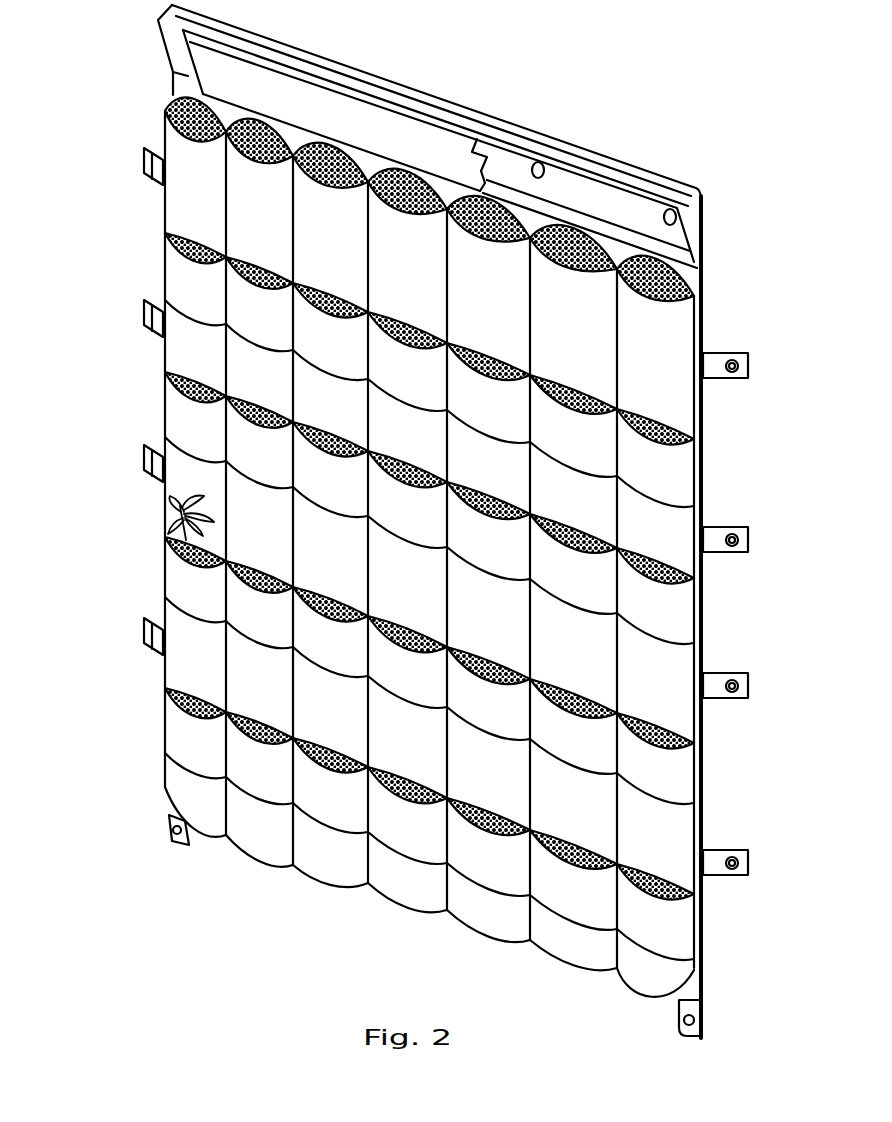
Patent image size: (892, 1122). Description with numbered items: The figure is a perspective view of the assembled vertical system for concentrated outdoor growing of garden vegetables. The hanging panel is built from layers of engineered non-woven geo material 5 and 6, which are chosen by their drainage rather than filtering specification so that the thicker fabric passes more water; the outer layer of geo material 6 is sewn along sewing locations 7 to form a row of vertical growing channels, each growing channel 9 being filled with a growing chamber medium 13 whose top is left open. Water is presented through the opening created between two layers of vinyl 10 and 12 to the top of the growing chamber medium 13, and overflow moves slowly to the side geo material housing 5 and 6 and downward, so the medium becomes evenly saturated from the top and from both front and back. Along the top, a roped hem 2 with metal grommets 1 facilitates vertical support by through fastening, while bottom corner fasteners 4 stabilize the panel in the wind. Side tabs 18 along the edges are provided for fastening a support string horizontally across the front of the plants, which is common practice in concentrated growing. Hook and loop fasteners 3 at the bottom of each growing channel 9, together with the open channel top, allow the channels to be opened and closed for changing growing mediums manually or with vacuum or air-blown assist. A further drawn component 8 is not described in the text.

The metal grommets 1 is at (545, 163).
The roped hem 2 is at (704, 190).
The hook and loop fasteners 3 is at (648, 986).
The bottom corner fasteners 4 is at (167, 819).
The geo material 5 is at (707, 283).
The geo material 6 is at (186, 347).
The sewing locations 7 is at (222, 210).
The plant pocket 8 is at (186, 573).
The growing channel 9 is at (345, 890).
The vinyl layer 10 is at (212, 58).
The vinyl layer 12 is at (705, 226).
The growing chamber medium 13 is at (167, 100).
The side tabs 18 is at (145, 458).